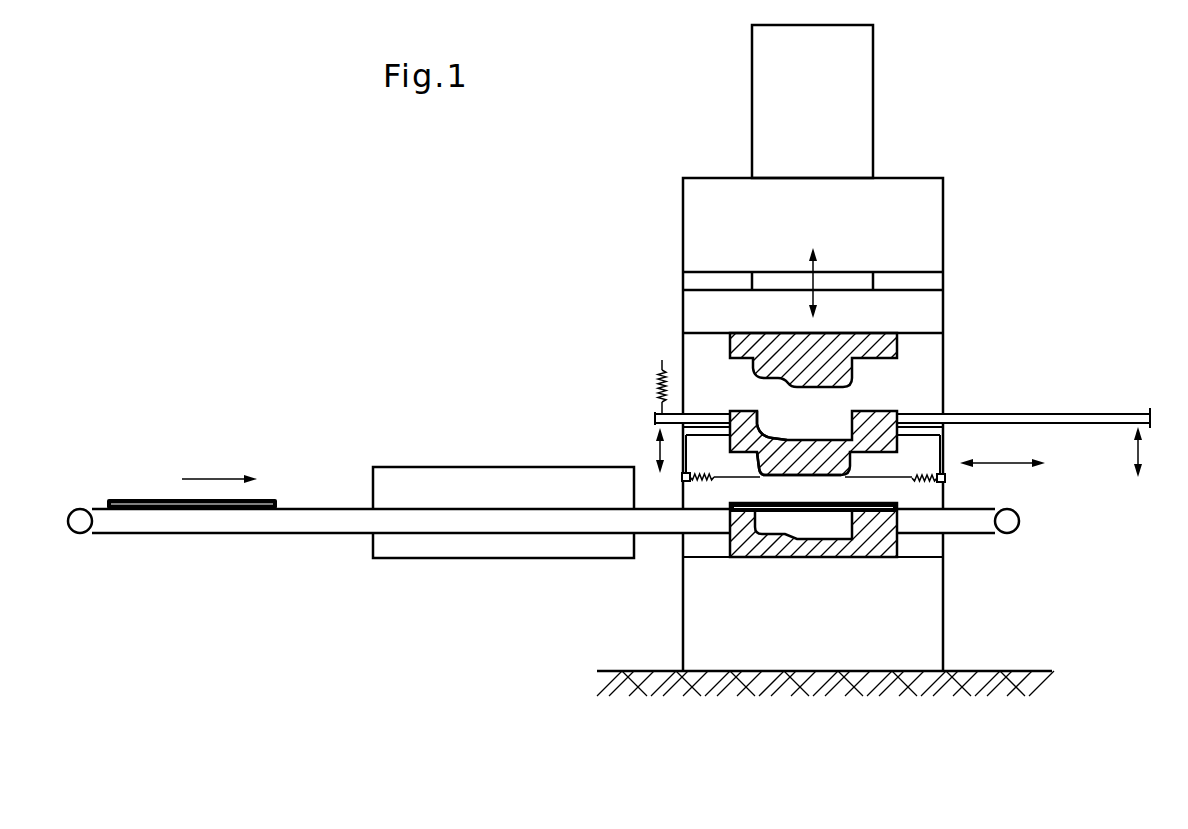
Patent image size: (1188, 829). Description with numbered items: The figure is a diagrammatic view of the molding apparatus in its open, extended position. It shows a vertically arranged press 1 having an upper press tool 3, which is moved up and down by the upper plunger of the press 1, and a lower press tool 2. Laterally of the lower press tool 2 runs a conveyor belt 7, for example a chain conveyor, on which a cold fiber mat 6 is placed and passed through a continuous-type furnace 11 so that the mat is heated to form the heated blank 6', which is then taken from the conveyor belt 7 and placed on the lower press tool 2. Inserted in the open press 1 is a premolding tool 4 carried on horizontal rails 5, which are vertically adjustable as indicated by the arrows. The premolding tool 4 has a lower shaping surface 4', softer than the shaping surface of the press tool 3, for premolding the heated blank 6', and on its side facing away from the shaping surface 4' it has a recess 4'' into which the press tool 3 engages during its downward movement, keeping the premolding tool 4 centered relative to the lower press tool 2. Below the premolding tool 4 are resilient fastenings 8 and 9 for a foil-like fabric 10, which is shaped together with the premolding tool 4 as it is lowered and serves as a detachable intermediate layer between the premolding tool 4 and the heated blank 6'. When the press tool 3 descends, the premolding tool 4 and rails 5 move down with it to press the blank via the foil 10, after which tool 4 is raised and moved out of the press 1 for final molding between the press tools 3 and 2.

The press 1 is at (929, 240).
The lower press tool 2 is at (756, 548).
The upper press tool 3 is at (887, 349).
The premolding tool 4 is at (814, 426).
The lower shaping surface 4' is at (780, 479).
The recess 4'' is at (771, 409).
The horizontal rails 5 is at (1078, 418).
The fiber mat 6 is at (192, 482).
The heated blank 6' is at (776, 534).
The conveyor belt 7 is at (1006, 531).
The resilient fastening 8 is at (681, 479).
The resilient fastening 9 is at (938, 482).
The foil-like fabric 10 is at (900, 468).
The continuous-type furnace 11 is at (398, 485).